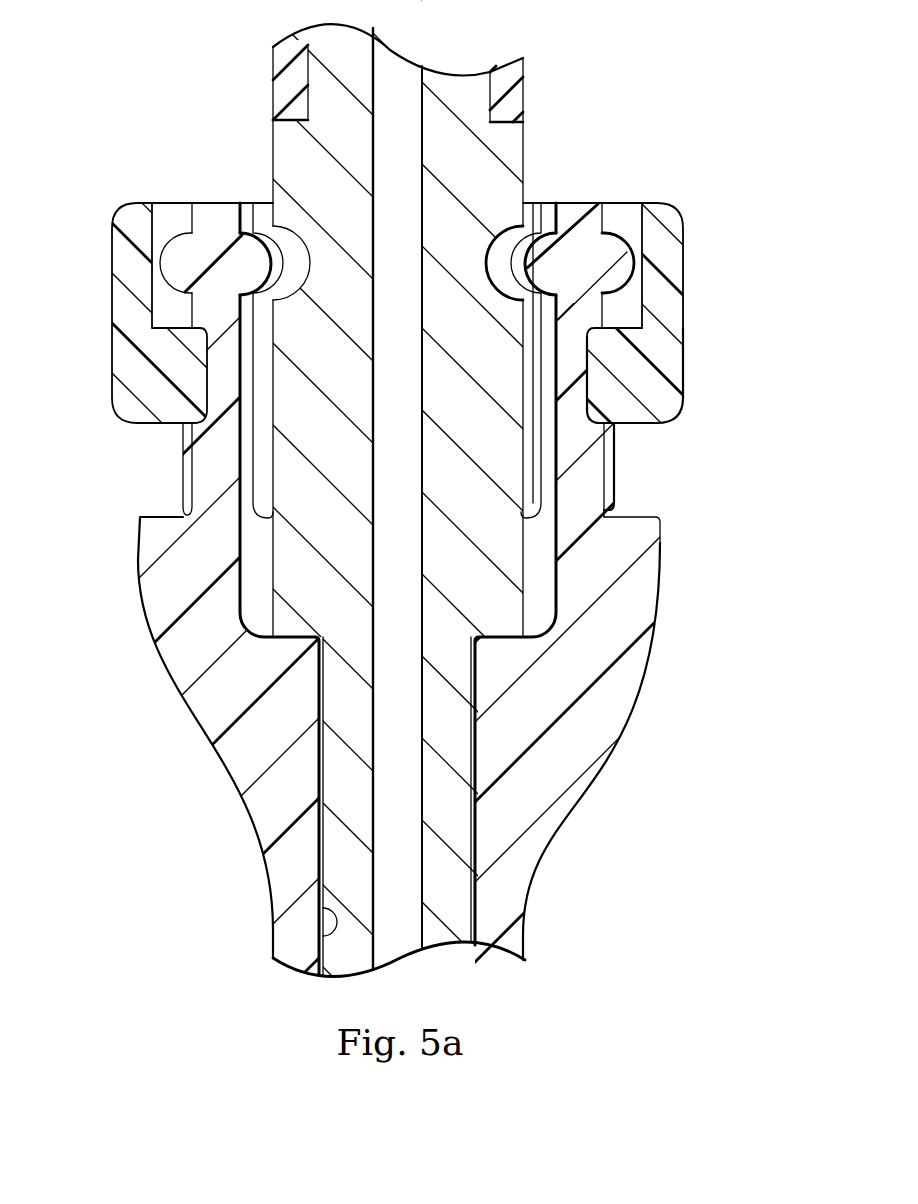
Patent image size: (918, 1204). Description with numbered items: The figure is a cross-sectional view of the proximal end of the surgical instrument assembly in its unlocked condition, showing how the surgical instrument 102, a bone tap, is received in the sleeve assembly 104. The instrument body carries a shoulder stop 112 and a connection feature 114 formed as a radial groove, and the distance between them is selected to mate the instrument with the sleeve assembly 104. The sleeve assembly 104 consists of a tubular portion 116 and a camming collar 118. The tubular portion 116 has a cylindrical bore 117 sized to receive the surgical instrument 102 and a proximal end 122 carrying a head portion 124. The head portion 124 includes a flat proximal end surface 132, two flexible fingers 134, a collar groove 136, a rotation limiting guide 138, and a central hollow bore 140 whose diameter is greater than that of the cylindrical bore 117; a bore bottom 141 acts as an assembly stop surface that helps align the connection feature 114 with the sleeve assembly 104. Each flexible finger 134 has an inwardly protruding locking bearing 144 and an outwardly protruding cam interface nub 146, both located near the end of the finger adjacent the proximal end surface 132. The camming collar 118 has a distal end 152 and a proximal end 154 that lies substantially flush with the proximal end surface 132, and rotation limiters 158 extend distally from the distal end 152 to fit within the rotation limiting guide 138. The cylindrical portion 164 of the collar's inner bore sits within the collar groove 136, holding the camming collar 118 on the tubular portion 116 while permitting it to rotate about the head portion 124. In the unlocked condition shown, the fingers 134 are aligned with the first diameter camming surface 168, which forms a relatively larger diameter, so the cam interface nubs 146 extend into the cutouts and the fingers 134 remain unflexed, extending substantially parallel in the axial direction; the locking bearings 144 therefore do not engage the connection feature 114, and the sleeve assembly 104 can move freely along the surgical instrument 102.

The surgical instrument 102 is at (270, 97).
The sleeve assembly 104 is at (180, 733).
The shoulder stop 112 is at (283, 640).
The connection feature 114 is at (500, 247).
The tubular portion 116 is at (255, 892).
The cylindrical bore 117 is at (330, 938).
The camming collar 118 is at (110, 304).
The proximal end 122 is at (677, 765).
The head portion 124 is at (710, 585).
The proximal end surface 132 is at (208, 201).
The flexible fingers 134 is at (190, 221).
The collar groove 136 is at (600, 385).
The rotation limiting guide 138 is at (183, 486).
The central hollow bore 140 is at (258, 196).
The bore bottom 141 is at (510, 637).
The locking bearing 144 is at (308, 262).
The cam interface nub 146 is at (165, 243).
The distal end 152 is at (658, 432).
The proximal end 154 is at (668, 204).
The rotation limiters 158 is at (617, 485).
The cylindrical portion 164 is at (625, 345).
The first diameter camming surface 168 is at (626, 212).